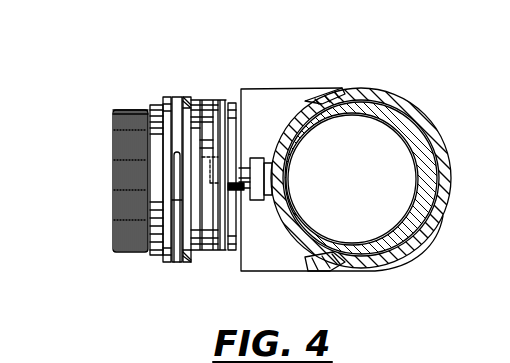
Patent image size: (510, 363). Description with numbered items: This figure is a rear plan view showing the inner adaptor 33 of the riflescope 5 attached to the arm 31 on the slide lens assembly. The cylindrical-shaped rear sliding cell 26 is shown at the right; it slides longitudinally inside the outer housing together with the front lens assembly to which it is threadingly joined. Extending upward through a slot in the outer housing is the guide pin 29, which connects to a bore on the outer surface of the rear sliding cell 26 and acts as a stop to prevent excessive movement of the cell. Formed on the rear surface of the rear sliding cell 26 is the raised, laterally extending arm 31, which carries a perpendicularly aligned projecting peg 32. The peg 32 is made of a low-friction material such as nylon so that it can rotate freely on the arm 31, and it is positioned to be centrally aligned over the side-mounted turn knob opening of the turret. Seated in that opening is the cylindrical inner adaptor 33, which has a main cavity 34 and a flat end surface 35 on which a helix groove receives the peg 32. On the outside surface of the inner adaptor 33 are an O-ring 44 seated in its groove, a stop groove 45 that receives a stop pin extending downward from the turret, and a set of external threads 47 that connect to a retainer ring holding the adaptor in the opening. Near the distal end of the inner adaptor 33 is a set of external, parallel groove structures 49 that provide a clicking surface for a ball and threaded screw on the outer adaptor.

The riflescope 5 is at (416, 90).
The rear sliding cell 26 is at (435, 130).
The guide pin 29 is at (351, 96).
The arm 31 is at (257, 201).
The peg 32 is at (239, 164).
The inner adaptor 33 is at (146, 91).
The main cavity 34 is at (104, 159).
The end surface 35 is at (238, 102).
The O-ring 44 is at (194, 97).
The stop groove 45 is at (176, 268).
The external threads 47 is at (149, 254).
The parallel groove structures 49 is at (118, 110).